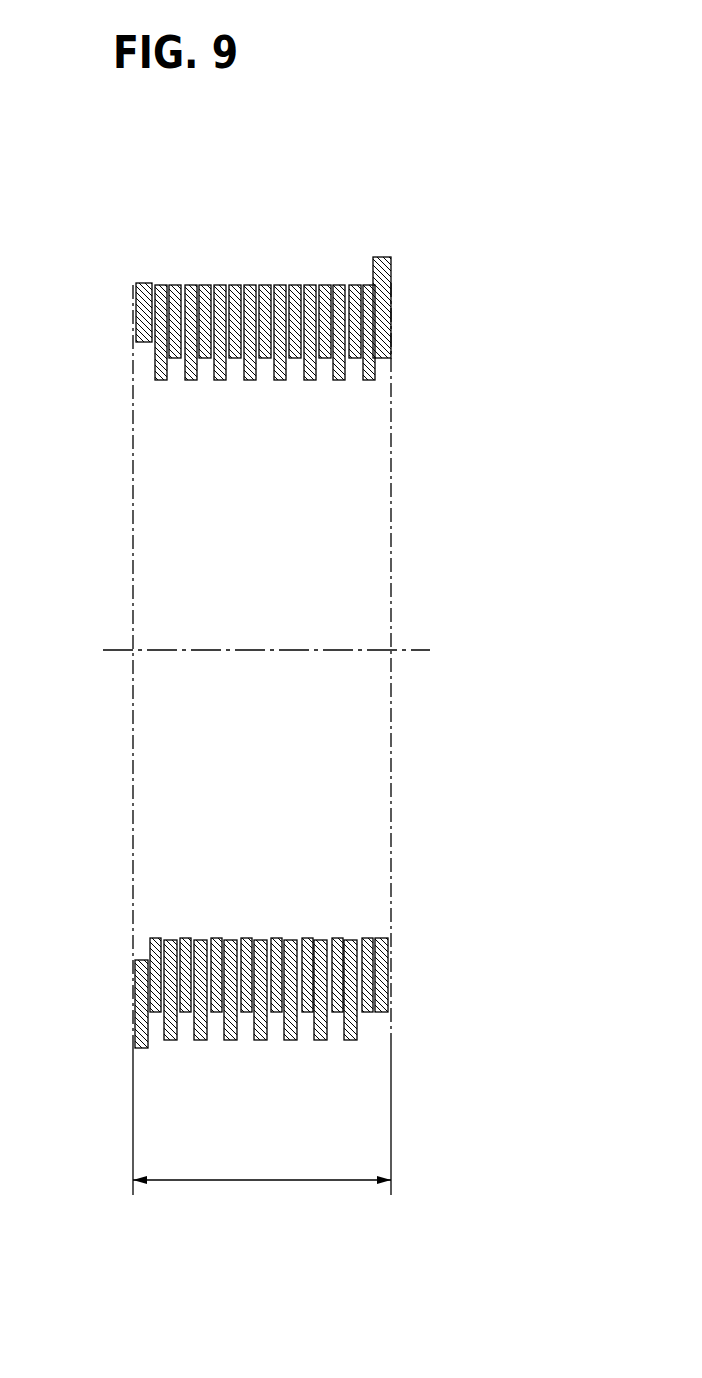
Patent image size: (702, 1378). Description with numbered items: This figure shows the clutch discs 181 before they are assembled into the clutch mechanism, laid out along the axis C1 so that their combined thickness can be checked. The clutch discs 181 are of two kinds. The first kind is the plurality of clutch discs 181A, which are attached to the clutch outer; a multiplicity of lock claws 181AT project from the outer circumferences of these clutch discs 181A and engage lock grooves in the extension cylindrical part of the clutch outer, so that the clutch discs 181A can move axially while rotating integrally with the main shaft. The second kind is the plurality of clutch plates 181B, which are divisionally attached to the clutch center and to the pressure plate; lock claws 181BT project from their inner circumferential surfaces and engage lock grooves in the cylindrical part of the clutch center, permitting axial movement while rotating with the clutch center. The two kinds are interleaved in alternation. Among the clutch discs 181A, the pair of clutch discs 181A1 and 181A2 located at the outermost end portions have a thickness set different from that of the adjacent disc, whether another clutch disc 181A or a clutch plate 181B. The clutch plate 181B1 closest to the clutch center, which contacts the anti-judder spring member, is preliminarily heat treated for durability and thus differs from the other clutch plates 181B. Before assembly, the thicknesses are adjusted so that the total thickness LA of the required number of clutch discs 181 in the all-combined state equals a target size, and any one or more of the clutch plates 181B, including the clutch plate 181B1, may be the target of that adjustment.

The clutch discs 181 is at (440, 263).
The clutch discs 181A is at (355, 285).
The clutch disc 181A1 is at (140, 283).
The clutch disc 181A2 is at (393, 283).
The lock claws 181AT is at (350, 1040).
The clutch plates 181B is at (367, 938).
The clutch plate 181B1 is at (158, 938).
The lock claws 181BT is at (369, 380).
The axis C1 is at (415, 650).
The total thickness LA is at (262, 1168).